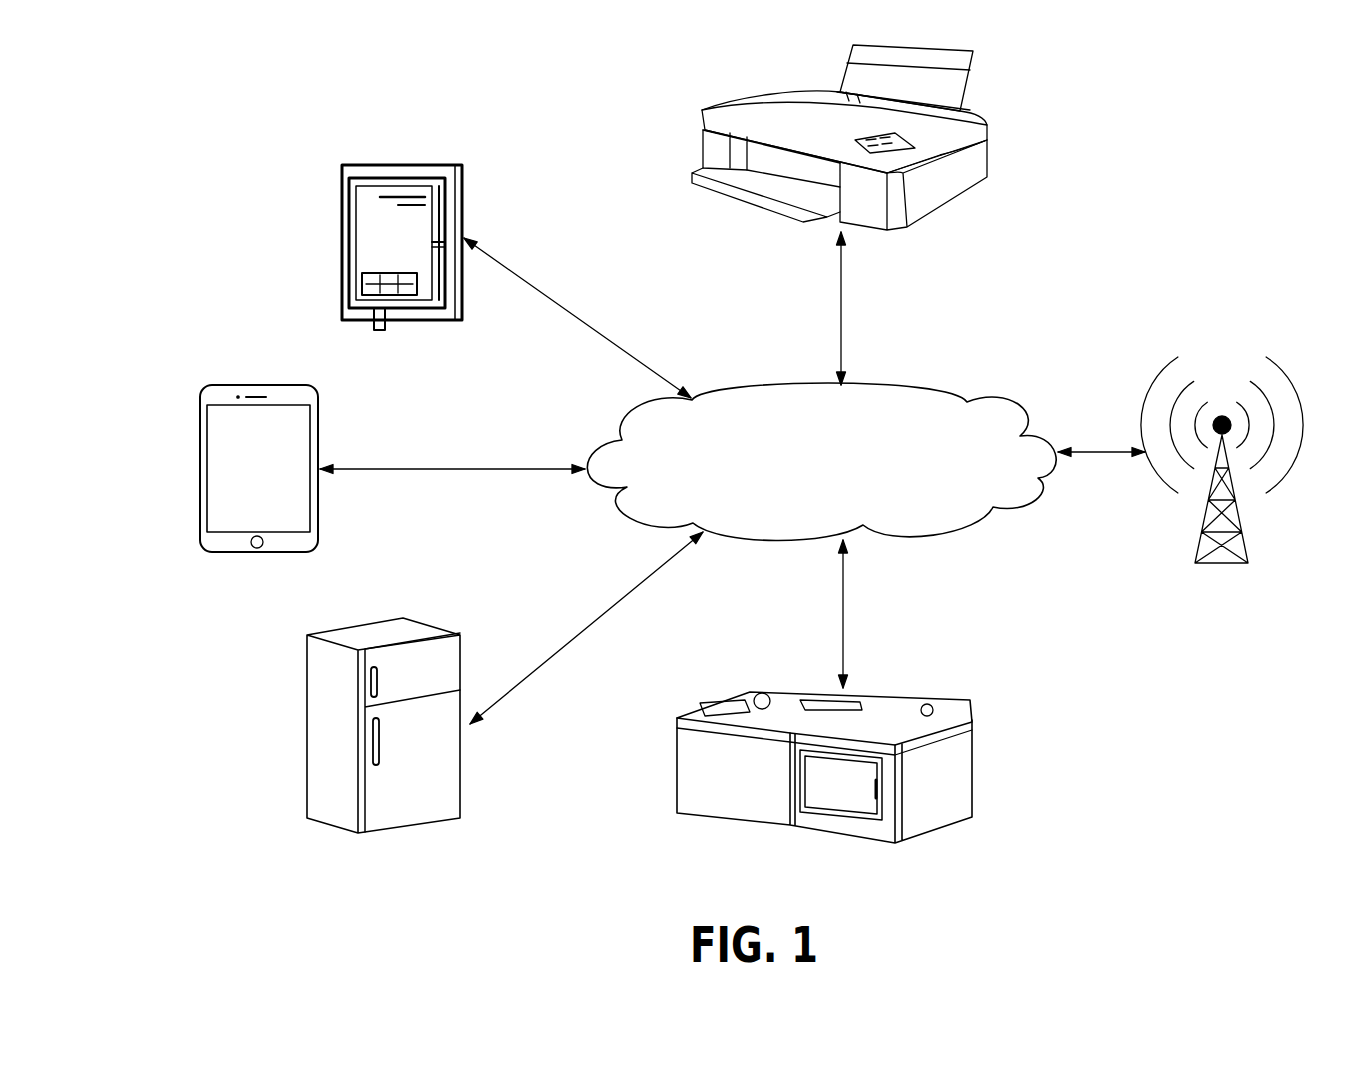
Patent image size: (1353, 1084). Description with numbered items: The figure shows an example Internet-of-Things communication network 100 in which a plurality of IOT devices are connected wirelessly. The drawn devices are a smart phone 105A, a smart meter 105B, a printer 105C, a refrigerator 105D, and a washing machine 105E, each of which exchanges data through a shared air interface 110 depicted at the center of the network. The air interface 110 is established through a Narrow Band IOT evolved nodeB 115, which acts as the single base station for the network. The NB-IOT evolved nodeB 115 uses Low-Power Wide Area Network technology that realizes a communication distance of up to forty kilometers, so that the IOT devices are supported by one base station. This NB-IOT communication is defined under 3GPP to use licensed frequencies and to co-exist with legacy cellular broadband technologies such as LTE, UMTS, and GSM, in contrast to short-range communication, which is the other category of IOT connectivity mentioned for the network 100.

The IOT communication network 100 is at (1078, 820).
The smart phone 105A is at (220, 371).
The smart meter 105B is at (343, 162).
The printer 105C is at (776, 88).
The refrigerator 105D is at (297, 634).
The washing machine 105E is at (781, 694).
The air interface 110 is at (821, 462).
The NB-IOT evolved nodeB 115 is at (1232, 565).